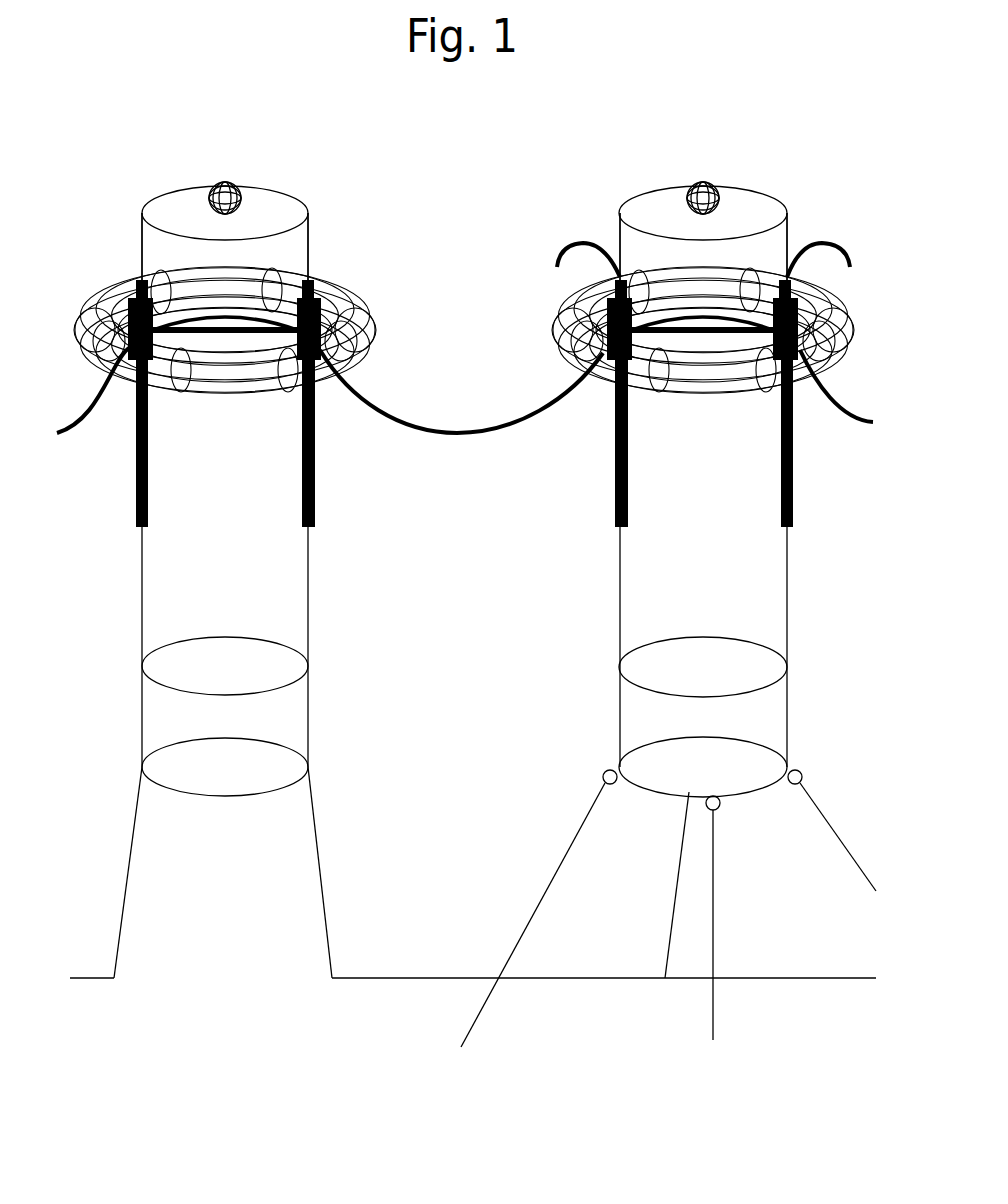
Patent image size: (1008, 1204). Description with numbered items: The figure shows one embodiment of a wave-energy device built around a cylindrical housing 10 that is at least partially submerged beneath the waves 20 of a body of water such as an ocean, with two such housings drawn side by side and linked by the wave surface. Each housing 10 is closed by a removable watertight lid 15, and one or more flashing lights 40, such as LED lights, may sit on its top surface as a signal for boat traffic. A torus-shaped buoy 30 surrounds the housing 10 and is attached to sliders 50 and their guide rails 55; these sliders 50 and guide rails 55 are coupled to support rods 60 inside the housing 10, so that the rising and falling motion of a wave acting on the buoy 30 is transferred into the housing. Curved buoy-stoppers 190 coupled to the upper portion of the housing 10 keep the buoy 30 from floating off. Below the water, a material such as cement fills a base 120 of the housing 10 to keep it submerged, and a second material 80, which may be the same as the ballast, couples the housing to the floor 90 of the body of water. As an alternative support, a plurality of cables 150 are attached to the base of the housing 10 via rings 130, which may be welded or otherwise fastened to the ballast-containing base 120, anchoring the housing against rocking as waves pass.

The housing 10 is at (305, 600).
The removable watertight lid 15 is at (282, 210).
The waves 20 is at (383, 418).
The buoy 30 is at (337, 300).
The flashing lights 40 is at (208, 200).
The sliders 50 is at (125, 397).
The guide rails 55 is at (313, 242).
The support rods 60 is at (195, 327).
The base material 80 is at (320, 871).
The floor 90 is at (390, 977).
The ballast base 120 is at (292, 738).
The rings 130 is at (606, 768).
The cables 150 is at (558, 878).
The curved buoy-stoppers 190 is at (577, 237).